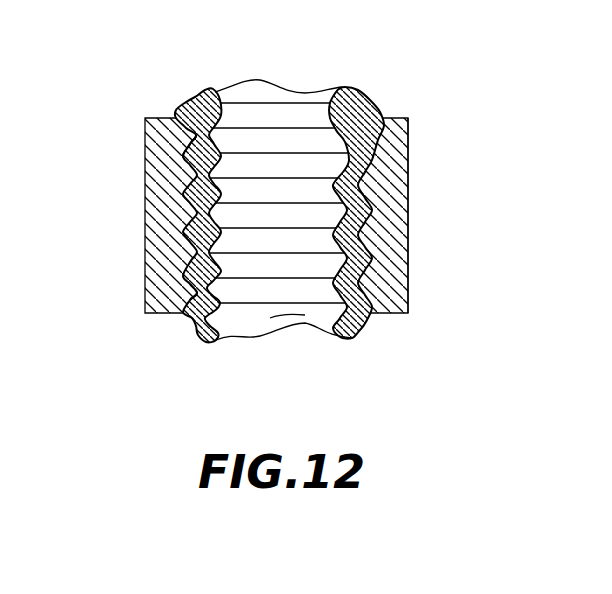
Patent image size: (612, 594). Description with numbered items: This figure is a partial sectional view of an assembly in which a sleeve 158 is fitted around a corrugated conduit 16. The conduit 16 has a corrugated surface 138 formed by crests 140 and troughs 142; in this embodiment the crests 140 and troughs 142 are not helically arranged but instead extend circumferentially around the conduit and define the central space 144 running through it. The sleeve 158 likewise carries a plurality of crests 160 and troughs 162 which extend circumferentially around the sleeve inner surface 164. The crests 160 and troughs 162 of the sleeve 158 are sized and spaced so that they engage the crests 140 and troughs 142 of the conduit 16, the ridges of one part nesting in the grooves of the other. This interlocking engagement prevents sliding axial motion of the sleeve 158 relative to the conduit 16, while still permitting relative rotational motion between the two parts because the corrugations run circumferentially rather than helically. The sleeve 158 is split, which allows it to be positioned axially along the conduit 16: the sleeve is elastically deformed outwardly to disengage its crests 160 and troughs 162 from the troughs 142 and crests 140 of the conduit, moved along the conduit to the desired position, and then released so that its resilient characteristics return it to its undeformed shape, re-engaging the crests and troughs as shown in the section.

The conduit 16 is at (194, 105).
The corrugated surface 138 is at (355, 336).
The crests 140 is at (388, 118).
The troughs 142 is at (343, 140).
The central space 144 is at (308, 325).
The sleeve 158 is at (408, 290).
The crests 160 is at (200, 186).
The troughs 162 is at (185, 152).
The sleeve inner surface 164 is at (190, 300).